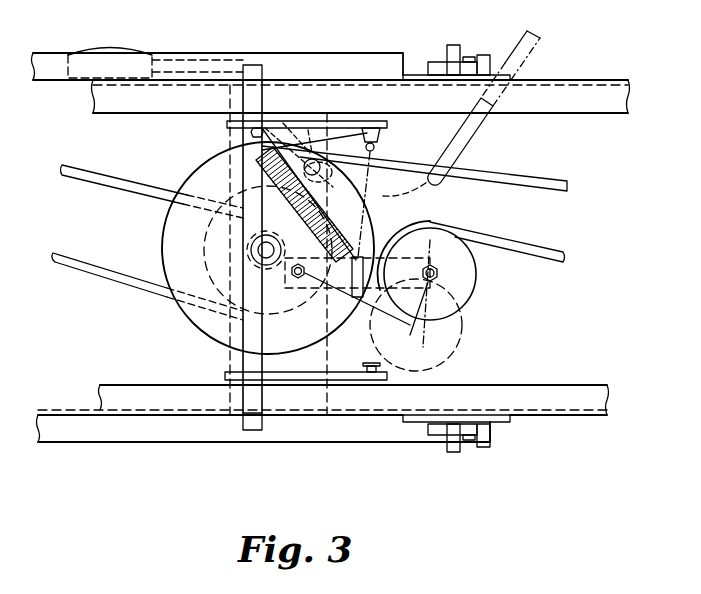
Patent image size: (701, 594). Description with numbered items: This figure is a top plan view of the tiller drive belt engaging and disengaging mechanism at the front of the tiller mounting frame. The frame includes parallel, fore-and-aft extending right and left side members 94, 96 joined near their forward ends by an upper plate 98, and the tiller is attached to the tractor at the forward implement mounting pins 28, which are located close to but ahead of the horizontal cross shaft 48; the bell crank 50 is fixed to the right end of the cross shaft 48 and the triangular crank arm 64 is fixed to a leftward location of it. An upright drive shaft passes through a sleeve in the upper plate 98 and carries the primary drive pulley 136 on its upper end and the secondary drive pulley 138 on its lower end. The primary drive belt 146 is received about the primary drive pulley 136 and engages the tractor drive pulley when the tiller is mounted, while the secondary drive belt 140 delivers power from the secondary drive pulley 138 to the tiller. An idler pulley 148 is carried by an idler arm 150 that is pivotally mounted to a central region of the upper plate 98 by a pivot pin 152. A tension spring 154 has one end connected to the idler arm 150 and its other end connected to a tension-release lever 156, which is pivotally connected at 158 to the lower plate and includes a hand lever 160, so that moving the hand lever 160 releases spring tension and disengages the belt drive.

The forward implement mounting pins 28 is at (452, 45).
The cross shaft 48 is at (243, 360).
The bell crank 50 is at (361, 368).
The crank arm 64 is at (387, 124).
The right side member 94 is at (330, 445).
The left side member 96 is at (373, 55).
The upper plate 98 is at (315, 137).
The primary drive pulley 136 is at (182, 313).
The secondary drive pulley 138 is at (163, 232).
The secondary drive belt 140 is at (95, 276).
The primary drive belt 146 is at (551, 261).
The idler pulley 148 is at (476, 282).
The idler arm 150 is at (459, 337).
The pivot pin 152 is at (351, 299).
The tension spring 154 is at (205, 163).
The tension-release lever 156 is at (240, 135).
The pivotal connection 158 is at (363, 199).
The hand lever 160 is at (233, 52).